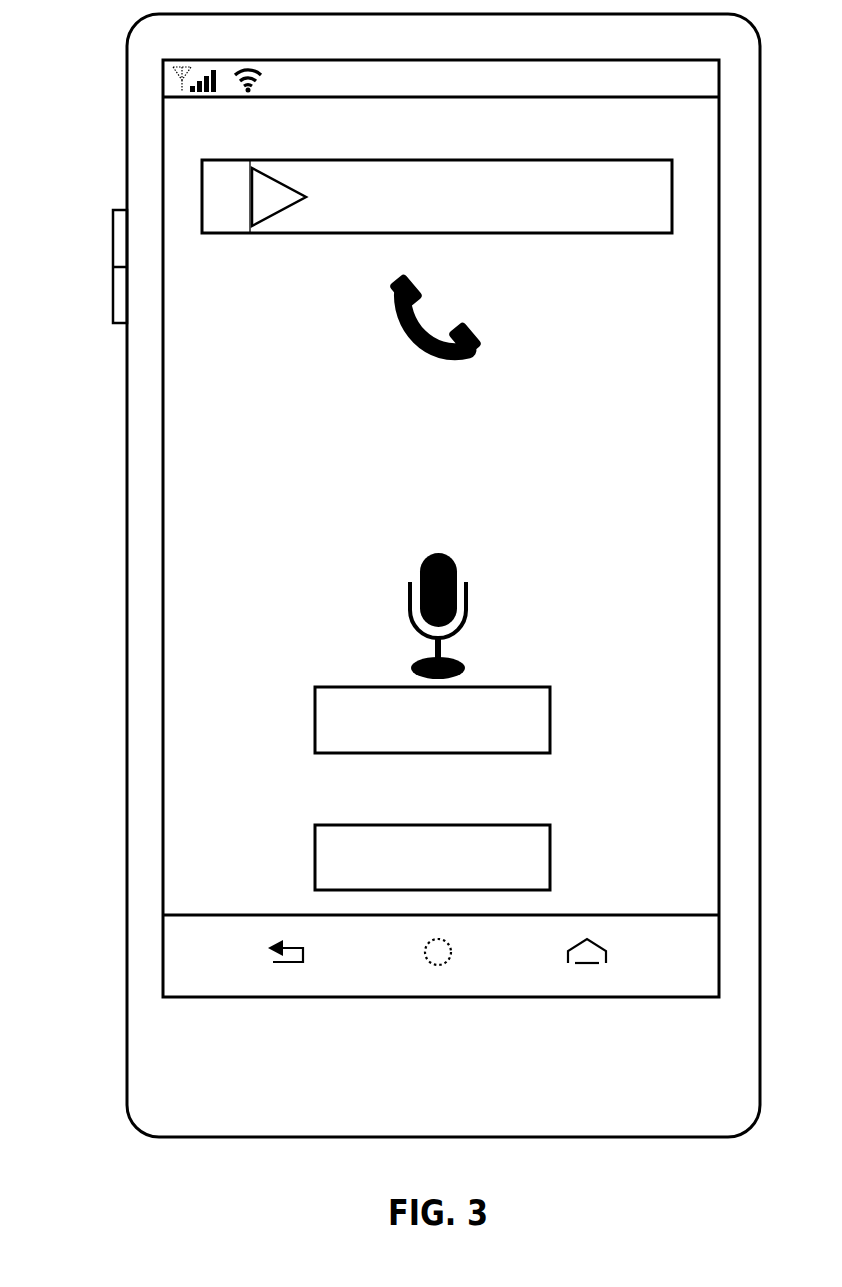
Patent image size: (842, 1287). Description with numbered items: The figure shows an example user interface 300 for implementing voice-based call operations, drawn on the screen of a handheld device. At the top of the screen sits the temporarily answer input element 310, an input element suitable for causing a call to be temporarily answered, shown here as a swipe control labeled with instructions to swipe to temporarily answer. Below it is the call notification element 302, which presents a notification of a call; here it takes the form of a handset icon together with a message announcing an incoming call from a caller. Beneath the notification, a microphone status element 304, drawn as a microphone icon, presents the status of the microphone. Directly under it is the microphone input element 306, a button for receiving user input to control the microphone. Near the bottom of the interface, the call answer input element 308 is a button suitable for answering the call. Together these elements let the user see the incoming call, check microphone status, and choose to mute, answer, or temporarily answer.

The user interface 300 is at (418, 149).
The call notification element 302 is at (196, 405).
The microphone status element 304 is at (478, 566).
The microphone input element 306 is at (552, 719).
The call answer input element 308 is at (552, 857).
The temporarily answer input element 310 is at (202, 197).